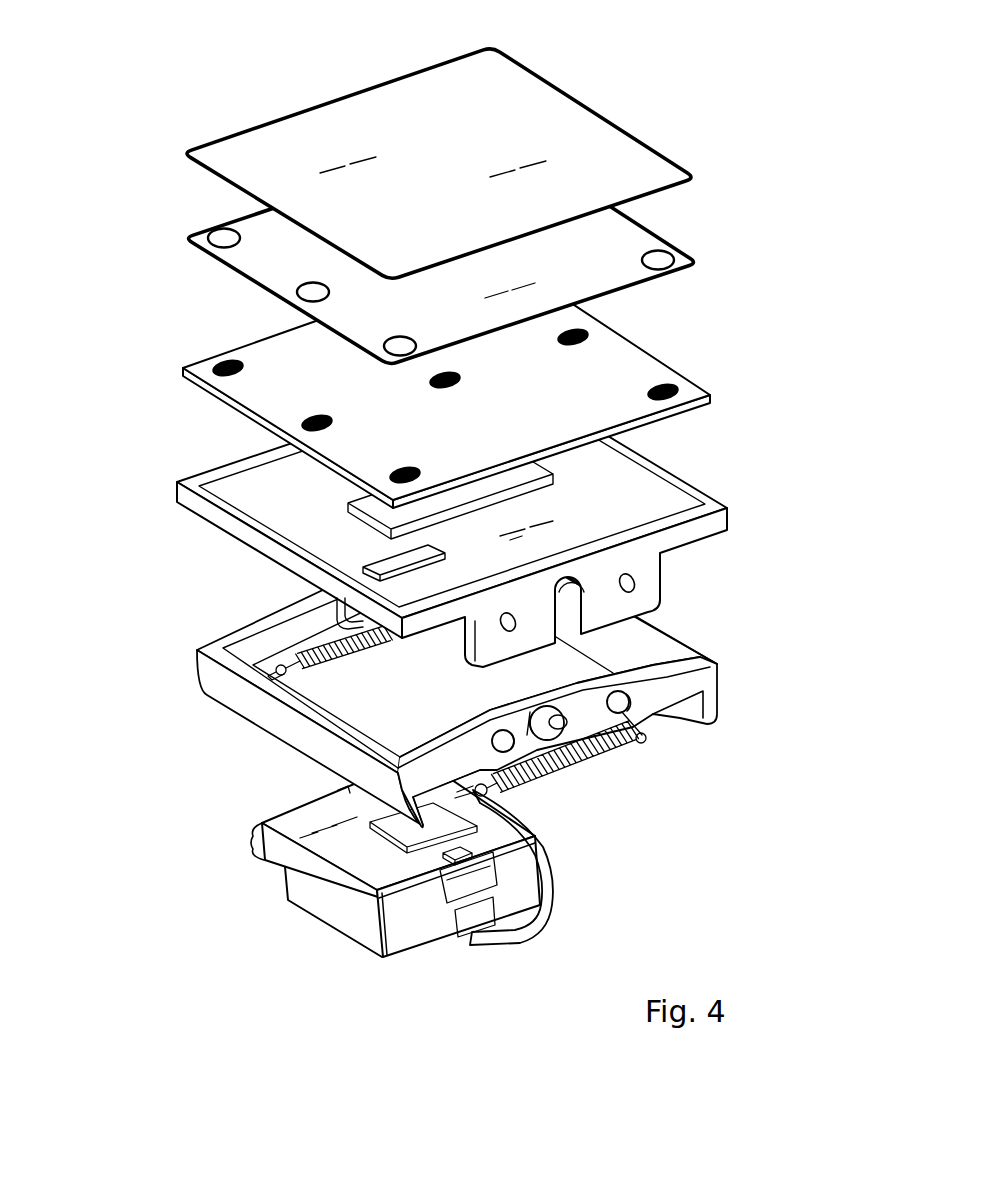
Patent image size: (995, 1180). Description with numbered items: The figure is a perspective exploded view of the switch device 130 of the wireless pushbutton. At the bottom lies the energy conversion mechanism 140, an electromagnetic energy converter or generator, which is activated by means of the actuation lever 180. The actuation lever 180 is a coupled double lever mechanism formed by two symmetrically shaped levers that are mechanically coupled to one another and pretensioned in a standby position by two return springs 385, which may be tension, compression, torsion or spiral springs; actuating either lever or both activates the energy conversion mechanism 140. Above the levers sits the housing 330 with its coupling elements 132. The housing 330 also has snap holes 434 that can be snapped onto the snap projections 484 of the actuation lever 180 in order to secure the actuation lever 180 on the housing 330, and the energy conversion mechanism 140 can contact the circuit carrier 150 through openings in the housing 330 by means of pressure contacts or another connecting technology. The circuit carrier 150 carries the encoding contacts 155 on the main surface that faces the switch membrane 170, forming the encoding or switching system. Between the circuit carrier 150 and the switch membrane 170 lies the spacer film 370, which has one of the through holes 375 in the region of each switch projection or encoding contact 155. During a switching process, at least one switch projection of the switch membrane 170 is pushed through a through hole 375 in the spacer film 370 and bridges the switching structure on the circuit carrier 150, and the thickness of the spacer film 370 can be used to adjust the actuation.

The switch device 130 is at (215, 85).
The switch membrane 170 is at (298, 153).
The through holes 375 is at (215, 232).
The spacer film 370 is at (240, 265).
The encoding contacts 155 is at (212, 366).
The circuit carrier 150 is at (285, 398).
The housing 330 is at (215, 524).
The return springs 385 is at (298, 640).
The actuation lever 180 is at (235, 695).
The energy conversion mechanism 140 is at (257, 827).
The snap holes 434 is at (633, 585).
The coupling elements 132 is at (640, 623).
The snap projections 484 is at (633, 706).